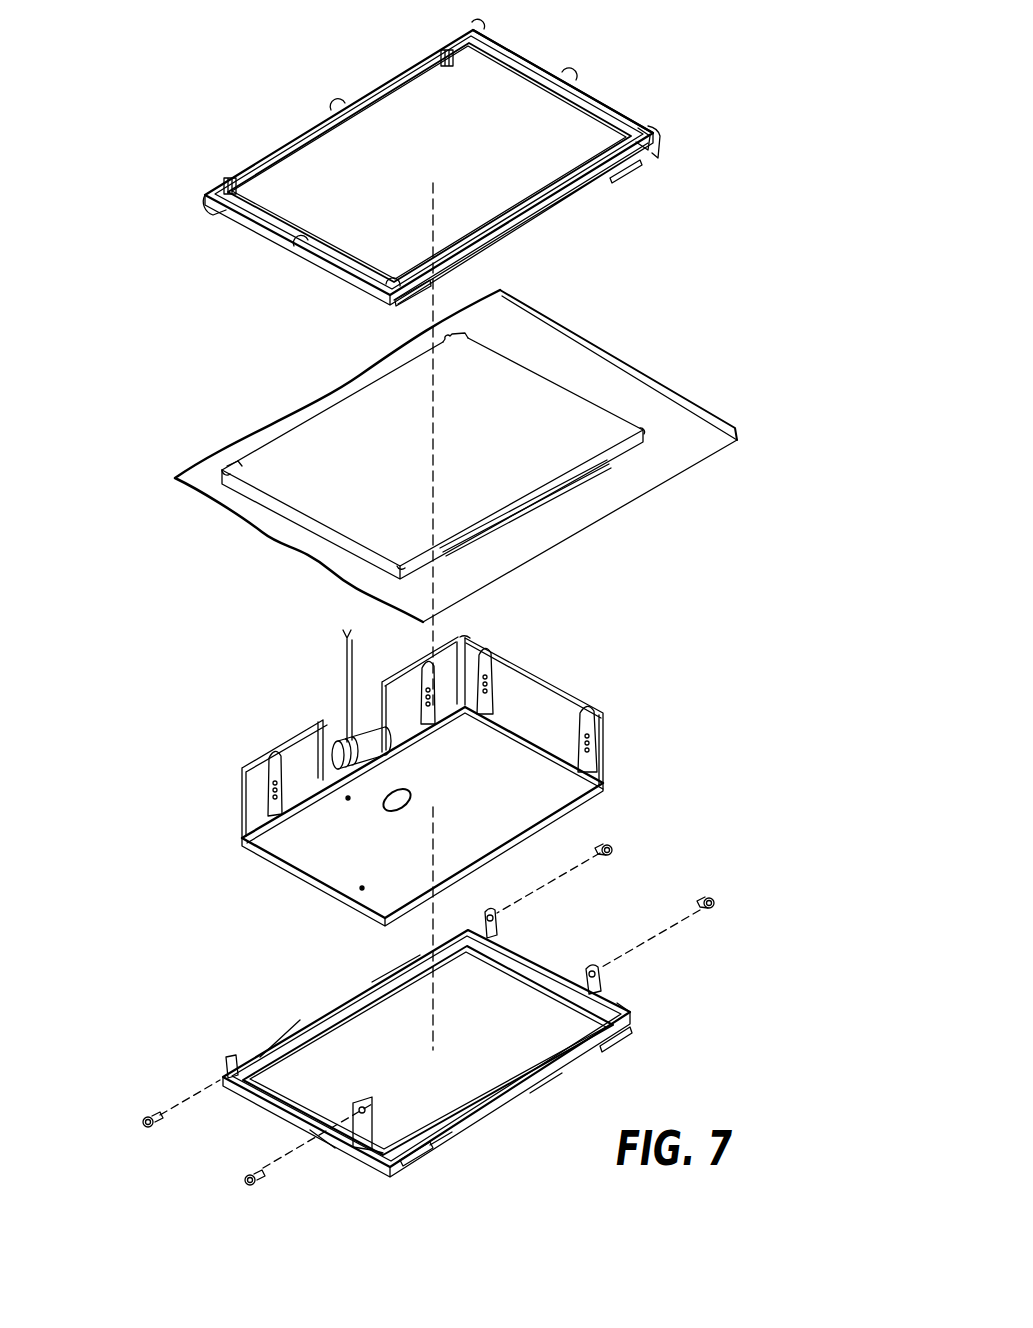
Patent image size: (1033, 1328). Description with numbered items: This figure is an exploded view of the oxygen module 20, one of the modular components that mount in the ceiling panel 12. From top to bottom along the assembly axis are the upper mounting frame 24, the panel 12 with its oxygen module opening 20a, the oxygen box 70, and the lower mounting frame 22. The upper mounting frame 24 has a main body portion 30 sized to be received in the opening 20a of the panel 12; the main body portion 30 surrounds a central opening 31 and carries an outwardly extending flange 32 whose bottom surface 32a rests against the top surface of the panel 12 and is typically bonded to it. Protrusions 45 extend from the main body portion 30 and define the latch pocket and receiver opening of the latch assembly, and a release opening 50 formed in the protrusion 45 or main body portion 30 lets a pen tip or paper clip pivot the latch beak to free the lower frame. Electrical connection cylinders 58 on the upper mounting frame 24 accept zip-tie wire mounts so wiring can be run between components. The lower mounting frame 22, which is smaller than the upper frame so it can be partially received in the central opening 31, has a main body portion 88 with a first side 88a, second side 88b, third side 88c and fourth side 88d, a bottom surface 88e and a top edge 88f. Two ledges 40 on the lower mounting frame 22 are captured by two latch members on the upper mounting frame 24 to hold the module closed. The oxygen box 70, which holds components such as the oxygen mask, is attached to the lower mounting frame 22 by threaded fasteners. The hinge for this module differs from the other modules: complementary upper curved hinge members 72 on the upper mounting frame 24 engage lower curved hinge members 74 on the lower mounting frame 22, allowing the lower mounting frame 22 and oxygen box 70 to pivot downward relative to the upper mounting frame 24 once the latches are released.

The oxygen module 20 is at (120, 127).
The upper mounting frame 24 is at (686, 62).
The electrical connection cylinders 58 is at (340, 103).
The protrusion 45 is at (447, 56).
The flange 32 is at (536, 60).
The main body portion 30 is at (626, 132).
The bottom surface 32a is at (660, 142).
The upper curved hinge member 72 is at (622, 183).
The release opening 50 is at (222, 215).
The central opening 31 is at (509, 150).
The oxygen module opening 20a is at (521, 447).
The panel 12 is at (710, 445).
The oxygen box 70 is at (530, 692).
The ledge 40 is at (452, 928).
The main body portion 88 is at (535, 952).
The first side 88a is at (302, 1020).
The second side 88b is at (562, 1073).
The third side 88c is at (617, 1003).
The fourth side 88d is at (335, 1148).
The bottom surface 88e is at (452, 1132).
The top edge 88f is at (372, 982).
The lower curved hinge member 74 is at (622, 1043).
The lower mounting frame 22 is at (512, 1100).